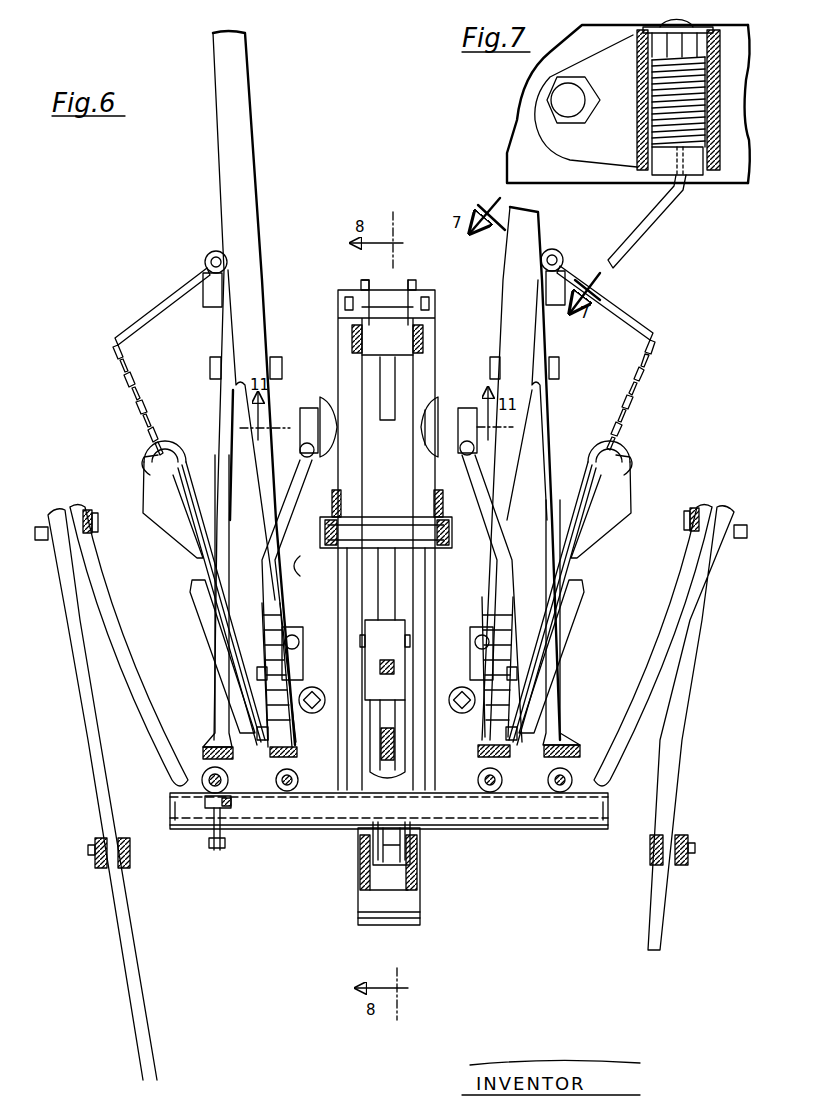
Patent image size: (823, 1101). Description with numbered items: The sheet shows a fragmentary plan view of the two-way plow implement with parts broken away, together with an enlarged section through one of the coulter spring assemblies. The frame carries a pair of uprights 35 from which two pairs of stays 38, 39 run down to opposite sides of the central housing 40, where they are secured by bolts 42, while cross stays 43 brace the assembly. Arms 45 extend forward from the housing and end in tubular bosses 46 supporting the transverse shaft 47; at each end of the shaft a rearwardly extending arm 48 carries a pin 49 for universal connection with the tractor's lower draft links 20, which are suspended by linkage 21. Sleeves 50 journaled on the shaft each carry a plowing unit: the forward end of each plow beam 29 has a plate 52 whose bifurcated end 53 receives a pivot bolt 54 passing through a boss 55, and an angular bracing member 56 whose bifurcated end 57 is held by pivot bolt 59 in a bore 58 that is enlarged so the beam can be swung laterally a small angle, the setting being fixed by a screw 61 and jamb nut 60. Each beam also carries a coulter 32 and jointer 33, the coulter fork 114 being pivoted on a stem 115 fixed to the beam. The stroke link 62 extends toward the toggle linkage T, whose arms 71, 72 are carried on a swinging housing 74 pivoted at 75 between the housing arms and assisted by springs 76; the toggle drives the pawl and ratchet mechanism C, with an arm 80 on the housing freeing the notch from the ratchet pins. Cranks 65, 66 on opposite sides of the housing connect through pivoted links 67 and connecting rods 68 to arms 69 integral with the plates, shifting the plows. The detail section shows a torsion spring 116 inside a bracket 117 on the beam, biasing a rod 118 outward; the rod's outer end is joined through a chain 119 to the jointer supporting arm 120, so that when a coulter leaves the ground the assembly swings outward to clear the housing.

In FIG. 6, the draft or hitch links 20 is at (93, 808).
In FIG. 6, the linkage 21 is at (93, 840).
In FIG. 6, the plow beam 29 is at (233, 192).
In FIG. 7, the plow beam 29 is at (738, 143).
In FIG. 6, the coulter 32 is at (186, 458).
In FIG. 6, the jointer 33 is at (177, 538).
In FIG. 6, the uprights 35 is at (88, 510).
In FIG. 6, the stays 38 is at (393, 355).
In FIG. 6, the stays 39 is at (330, 528).
In FIG. 6, the housing 40 is at (410, 375).
In FIG. 6, the bolts 42 is at (298, 568).
In FIG. 6, the cross stays 43 is at (341, 500).
In FIG. 6, the arms 45 is at (386, 628).
In FIG. 6, the tubular bosses 46 is at (420, 832).
In FIG. 6, the shaft 47 is at (172, 808).
In FIG. 6, the arm 48 is at (148, 680).
In FIG. 6, the pin 49 is at (40, 540).
In FIG. 6, the sleeves 50 is at (206, 830).
In FIG. 6, the plate 52 is at (296, 628).
In FIG. 6, the bifurcated end 53 is at (298, 752).
In FIG. 6, the pivot bolt 54 is at (298, 768).
In FIG. 6, the boss 55 is at (288, 792).
In FIG. 6, the bracing member 56 is at (214, 702).
In FIG. 7, the bracing member 56 is at (522, 130).
In FIG. 6, the bifurcated end 57 is at (205, 755).
In FIG. 6, the bore 58 is at (229, 780).
In FIG. 6, the pivot bolt 59 is at (202, 778).
In FIG. 6, the jamb nut 60 is at (232, 830).
In FIG. 6, the screw 61 is at (224, 848).
In FIG. 6, the stroke link 62 is at (396, 752).
In FIG. 6, the crank 65 is at (390, 412).
In FIG. 6, the crank 66 is at (318, 408).
In FIG. 6, the pivoted link 67 is at (300, 420).
In FIG. 6, the connecting rod 68 is at (292, 596).
In FIG. 6, the arm 69 is at (300, 665).
In FIG. 6, the toggle arm 71 is at (400, 678).
In FIG. 6, the toggle arm 72 is at (378, 578).
In FIG. 6, the swinging housing 74 is at (368, 925).
In FIG. 6, the pivot 75 is at (412, 862).
In FIG. 6, the springs 76 is at (370, 878).
In FIG. 6, the arm 80 is at (380, 420).
In FIG. 6, the coulter fork 114 is at (200, 618).
In FIG. 6, the stems 115 is at (262, 695).
In FIG. 7, the torsion springs 116 is at (700, 103).
In FIG. 6, the brackets 117 is at (205, 262).
In FIG. 7, the brackets 117 is at (720, 80).
In FIG. 6, the rods 118 is at (168, 302).
In FIG. 7, the rods 118 is at (680, 216).
In FIG. 6, the chains 119 is at (134, 395).
In FIG. 6, the jointer supporting arms 120 is at (145, 462).
In FIG. 6, the pawl and ratchet mechanism C is at (372, 398).
In FIG. 6, the toggle linkage T is at (410, 640).